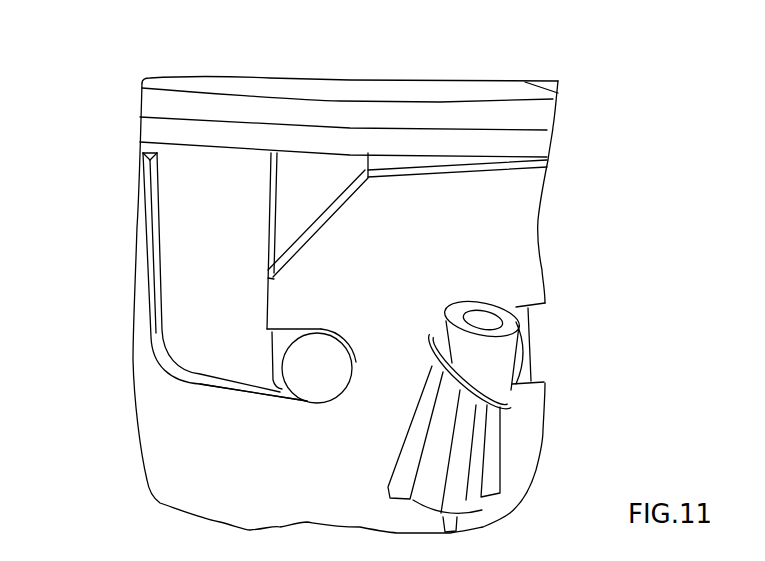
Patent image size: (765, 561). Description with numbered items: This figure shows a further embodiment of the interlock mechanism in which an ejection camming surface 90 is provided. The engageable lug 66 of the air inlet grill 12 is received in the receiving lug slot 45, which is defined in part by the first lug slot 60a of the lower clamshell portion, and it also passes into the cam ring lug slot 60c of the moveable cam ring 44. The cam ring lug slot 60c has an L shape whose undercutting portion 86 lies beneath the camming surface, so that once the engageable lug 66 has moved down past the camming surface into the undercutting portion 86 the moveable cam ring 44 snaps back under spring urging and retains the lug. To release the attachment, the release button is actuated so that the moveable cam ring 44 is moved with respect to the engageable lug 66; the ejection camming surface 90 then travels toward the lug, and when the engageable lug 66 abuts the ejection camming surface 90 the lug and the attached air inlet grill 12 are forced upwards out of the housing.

The air inlet grill 12 is at (498, 143).
The moveable cam ring 44 is at (492, 238).
The receiving lug slot 45 is at (117, 261).
The first lug slot 60a is at (273, 188).
The cam ring lug slot 60c is at (155, 232).
The engageable lug 66 is at (318, 377).
The undercutting portion 86 is at (355, 372).
The ejection camming surface 90 is at (160, 347).